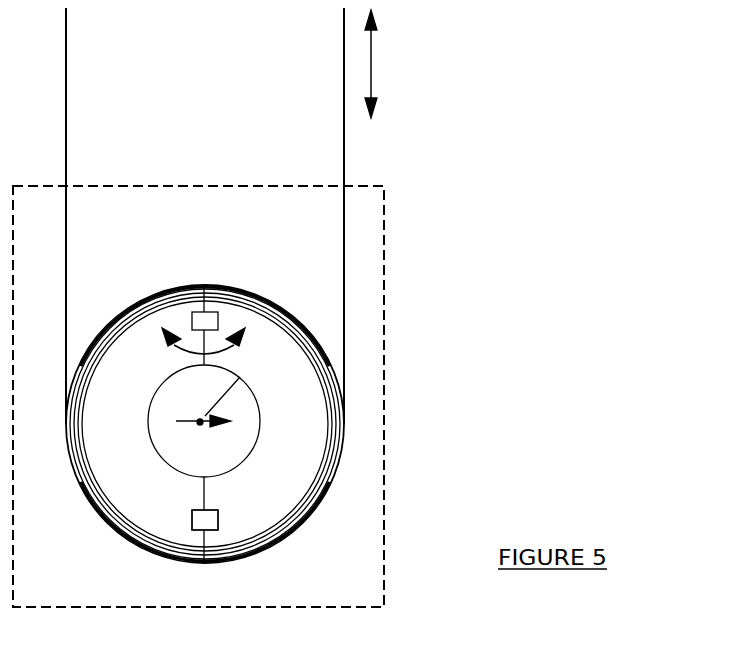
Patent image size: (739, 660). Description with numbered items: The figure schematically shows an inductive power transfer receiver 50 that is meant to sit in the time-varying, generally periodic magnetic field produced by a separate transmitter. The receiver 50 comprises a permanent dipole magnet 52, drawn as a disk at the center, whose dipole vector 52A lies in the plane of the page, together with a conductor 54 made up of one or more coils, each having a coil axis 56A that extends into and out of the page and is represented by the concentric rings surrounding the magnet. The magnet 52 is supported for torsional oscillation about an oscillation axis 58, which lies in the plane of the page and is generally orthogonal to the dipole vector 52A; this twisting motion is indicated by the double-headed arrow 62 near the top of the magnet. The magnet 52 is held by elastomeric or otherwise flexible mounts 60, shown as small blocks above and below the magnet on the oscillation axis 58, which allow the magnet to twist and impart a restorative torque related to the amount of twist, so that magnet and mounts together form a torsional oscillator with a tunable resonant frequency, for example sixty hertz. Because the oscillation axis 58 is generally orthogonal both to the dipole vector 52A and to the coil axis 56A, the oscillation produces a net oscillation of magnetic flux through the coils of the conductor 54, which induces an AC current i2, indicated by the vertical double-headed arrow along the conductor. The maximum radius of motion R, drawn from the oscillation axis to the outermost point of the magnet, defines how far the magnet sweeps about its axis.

The inductive power transfer receiver 50 is at (427, 347).
The permanent dipole magnet 52 is at (170, 447).
The dipole vector 52A is at (175, 396).
The conductor 54 is at (102, 520).
The coil axis 56A is at (212, 432).
The oscillation axis 58 is at (204, 548).
The flexible mounts 60 is at (208, 323).
The double-headed arrow 62 is at (228, 347).
The maximum radius of motion R is at (223, 398).
The AC current i2 is at (371, 70).